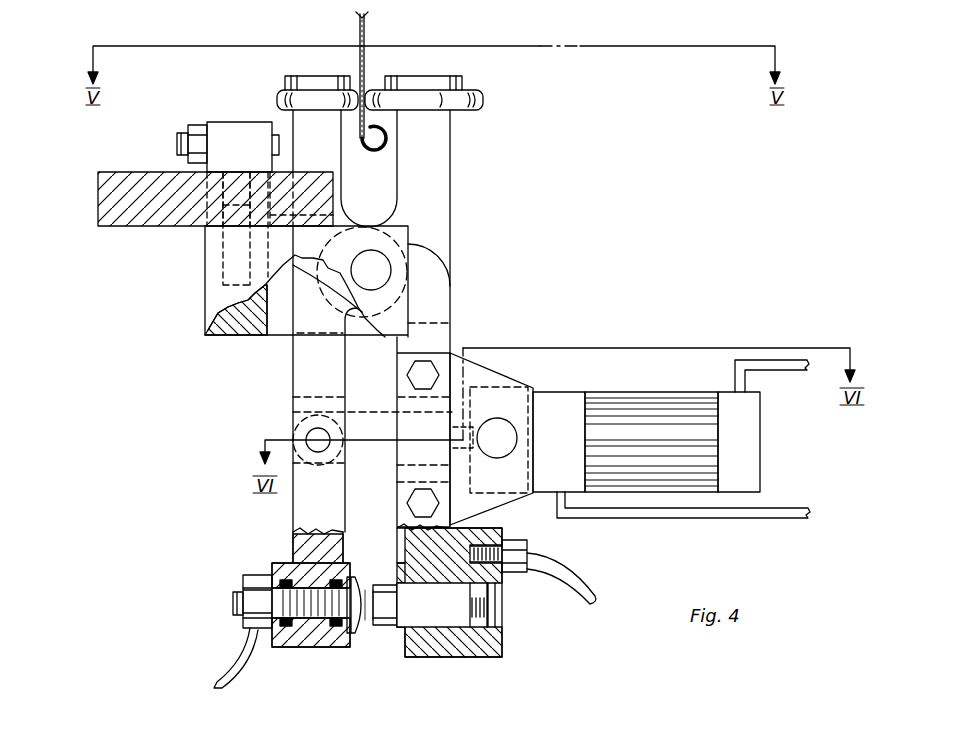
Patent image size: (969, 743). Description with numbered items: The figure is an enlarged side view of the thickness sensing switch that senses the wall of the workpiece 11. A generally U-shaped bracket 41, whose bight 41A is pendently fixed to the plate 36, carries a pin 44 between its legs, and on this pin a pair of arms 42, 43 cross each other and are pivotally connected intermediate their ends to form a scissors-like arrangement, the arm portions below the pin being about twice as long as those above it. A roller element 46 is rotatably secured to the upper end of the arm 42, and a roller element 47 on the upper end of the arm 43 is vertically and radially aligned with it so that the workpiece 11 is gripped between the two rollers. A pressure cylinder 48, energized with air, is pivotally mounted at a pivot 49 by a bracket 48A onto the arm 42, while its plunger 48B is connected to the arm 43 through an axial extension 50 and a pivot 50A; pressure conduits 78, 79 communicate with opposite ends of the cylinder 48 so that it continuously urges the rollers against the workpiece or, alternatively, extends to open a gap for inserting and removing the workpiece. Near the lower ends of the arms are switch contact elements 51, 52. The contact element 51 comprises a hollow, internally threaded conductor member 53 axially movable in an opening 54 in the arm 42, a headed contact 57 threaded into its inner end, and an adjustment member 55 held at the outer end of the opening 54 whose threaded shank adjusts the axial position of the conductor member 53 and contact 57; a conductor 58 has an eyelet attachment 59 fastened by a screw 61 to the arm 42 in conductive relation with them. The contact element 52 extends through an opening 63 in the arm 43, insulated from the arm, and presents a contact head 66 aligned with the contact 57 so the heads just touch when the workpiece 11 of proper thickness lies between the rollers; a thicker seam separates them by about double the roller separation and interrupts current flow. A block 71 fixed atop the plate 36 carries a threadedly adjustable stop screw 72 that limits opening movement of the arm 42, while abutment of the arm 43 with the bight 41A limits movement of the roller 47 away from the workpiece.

The workpiece 11 is at (366, 36).
The plate 36 is at (150, 222).
The U-shaped bracket 41 is at (200, 292).
The bight 41A is at (252, 322).
The arm 42 is at (302, 128).
The arm 43 is at (442, 256).
The pin 44 is at (383, 270).
The roller element 46 is at (278, 96).
The roller element 47 is at (483, 97).
The pressure cylinder 48 is at (648, 410).
The bracket 48A is at (480, 371).
The plunger 48B is at (528, 380).
The pivot 49 is at (497, 450).
The axial extension 50 is at (357, 424).
The pivot 50A is at (313, 433).
The switch contact element 51 is at (370, 645).
The switch contact element 52 is at (355, 640).
The hollow conductor member 53 is at (405, 612).
The opening 54 is at (480, 630).
The adjustment member 55 is at (510, 606).
The headed contact 57 is at (380, 590).
The conductor 58 is at (590, 586).
The eyelet attachment 59 is at (530, 548).
The screw 61 is at (542, 566).
The opening 63 is at (282, 585).
The contact head 66 is at (355, 580).
The block 71 is at (215, 165).
The stop screw 72 is at (180, 137).
The pressure conduit 78 is at (697, 515).
The pressure conduit 79 is at (779, 365).